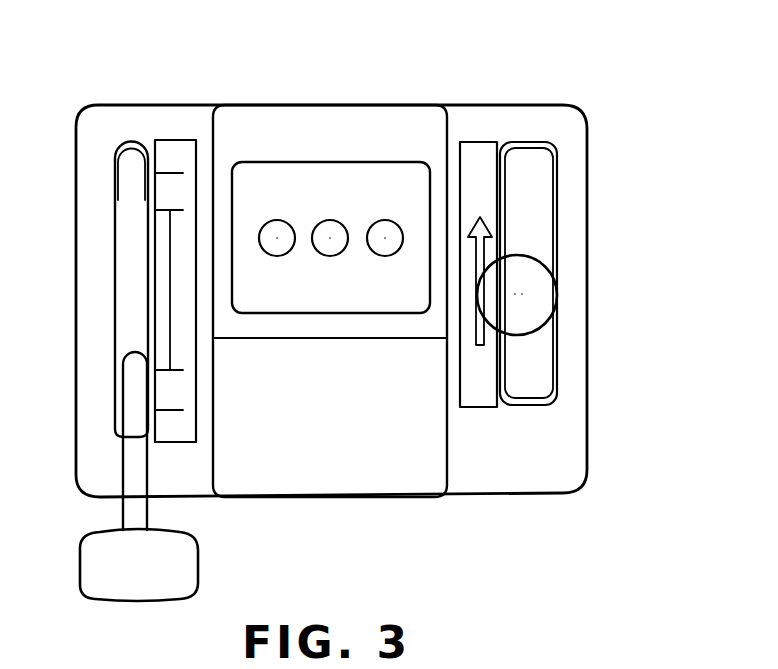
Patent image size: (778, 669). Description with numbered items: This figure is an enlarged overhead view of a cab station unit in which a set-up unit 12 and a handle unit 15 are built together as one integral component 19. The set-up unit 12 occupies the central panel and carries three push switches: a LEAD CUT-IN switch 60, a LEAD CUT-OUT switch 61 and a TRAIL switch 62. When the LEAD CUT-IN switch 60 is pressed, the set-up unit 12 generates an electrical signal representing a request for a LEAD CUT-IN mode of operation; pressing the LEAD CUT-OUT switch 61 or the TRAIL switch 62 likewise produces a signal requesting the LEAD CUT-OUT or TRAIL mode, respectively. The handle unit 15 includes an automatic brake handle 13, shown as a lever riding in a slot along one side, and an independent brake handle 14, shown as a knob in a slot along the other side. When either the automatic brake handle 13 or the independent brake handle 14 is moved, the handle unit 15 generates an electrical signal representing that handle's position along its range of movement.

The integral component 19 is at (468, 76).
The set-up unit 12 is at (310, 162).
The automatic brake handle 13 is at (83, 545).
The independent brake handle 14 is at (553, 289).
The handle unit 15 is at (212, 498).
The LEAD CUT-IN switch 60 is at (270, 256).
The LEAD CUT-OUT switch 61 is at (331, 256).
The TRAIL switch 62 is at (390, 256).